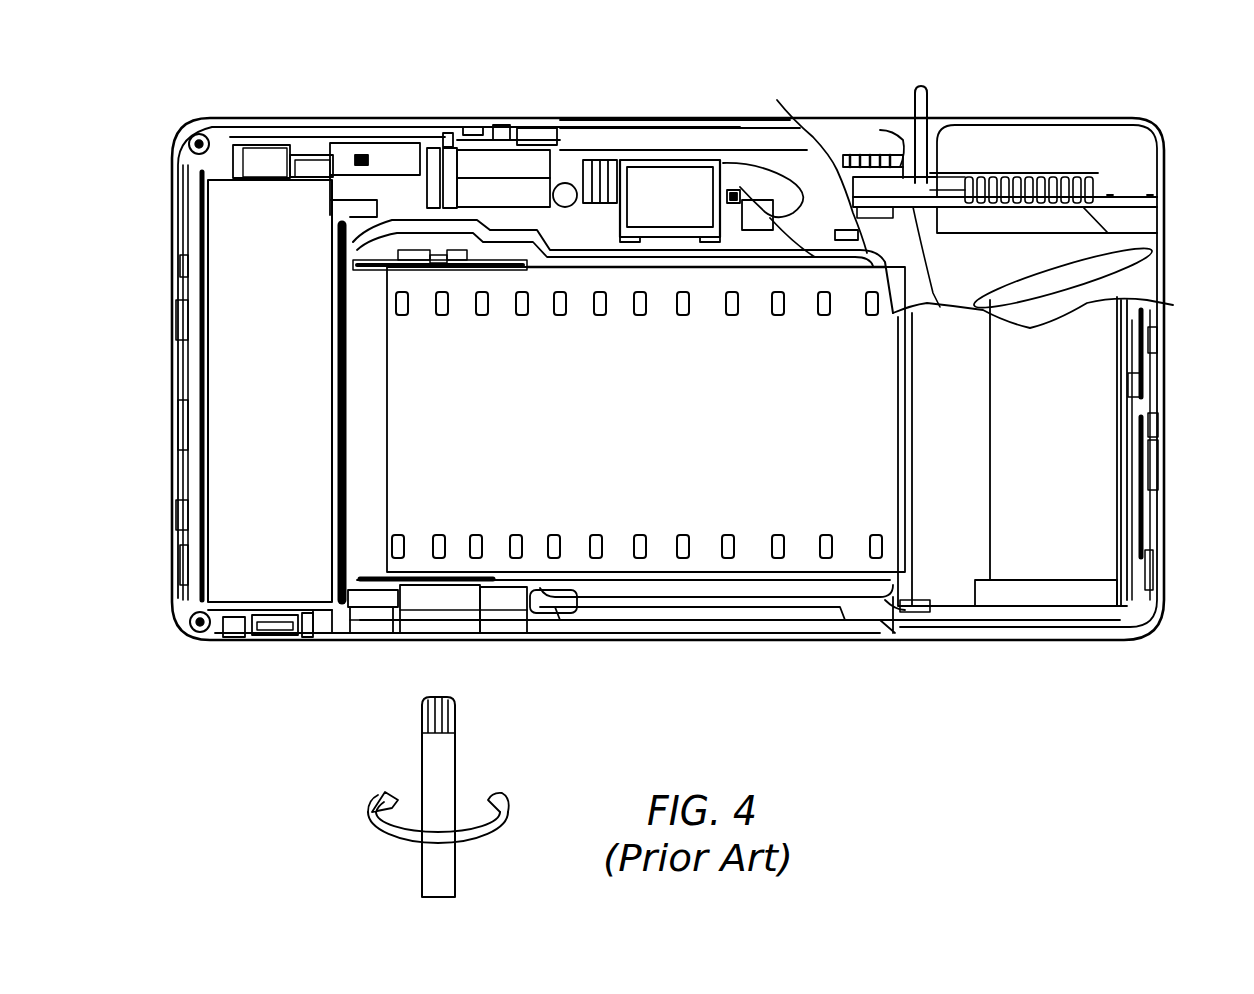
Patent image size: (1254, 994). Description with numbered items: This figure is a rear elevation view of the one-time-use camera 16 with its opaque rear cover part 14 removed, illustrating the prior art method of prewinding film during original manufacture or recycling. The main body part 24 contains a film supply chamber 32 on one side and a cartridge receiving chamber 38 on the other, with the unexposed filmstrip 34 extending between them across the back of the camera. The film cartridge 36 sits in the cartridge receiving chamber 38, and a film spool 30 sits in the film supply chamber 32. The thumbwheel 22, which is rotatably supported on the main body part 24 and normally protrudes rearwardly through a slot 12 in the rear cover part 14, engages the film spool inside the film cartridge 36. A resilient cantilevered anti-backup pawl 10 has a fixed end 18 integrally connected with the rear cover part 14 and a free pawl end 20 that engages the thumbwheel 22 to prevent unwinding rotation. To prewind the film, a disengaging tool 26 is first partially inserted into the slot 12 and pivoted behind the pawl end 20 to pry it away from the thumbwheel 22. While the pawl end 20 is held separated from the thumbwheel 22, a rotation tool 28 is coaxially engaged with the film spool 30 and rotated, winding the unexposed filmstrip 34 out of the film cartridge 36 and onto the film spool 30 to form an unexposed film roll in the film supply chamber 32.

The anti-backup pawl 10 is at (865, 160).
The slot 12 is at (850, 163).
The rear cover part 14 is at (812, 235).
The one-time-use camera 16 is at (268, 112).
The fixed end 18 is at (780, 104).
The pawl end 20 is at (946, 187).
The thumbwheel 22 is at (1015, 183).
The main body part 24 is at (887, 643).
The disengaging tool 26 is at (930, 100).
The rotation tool 28 is at (447, 768).
The film spool 30 is at (437, 593).
The film supply chamber 32 is at (363, 557).
The unexposed filmstrip 34 is at (655, 452).
The film cartridge 36 is at (1093, 502).
The cartridge receiving chamber 38 is at (1133, 577).